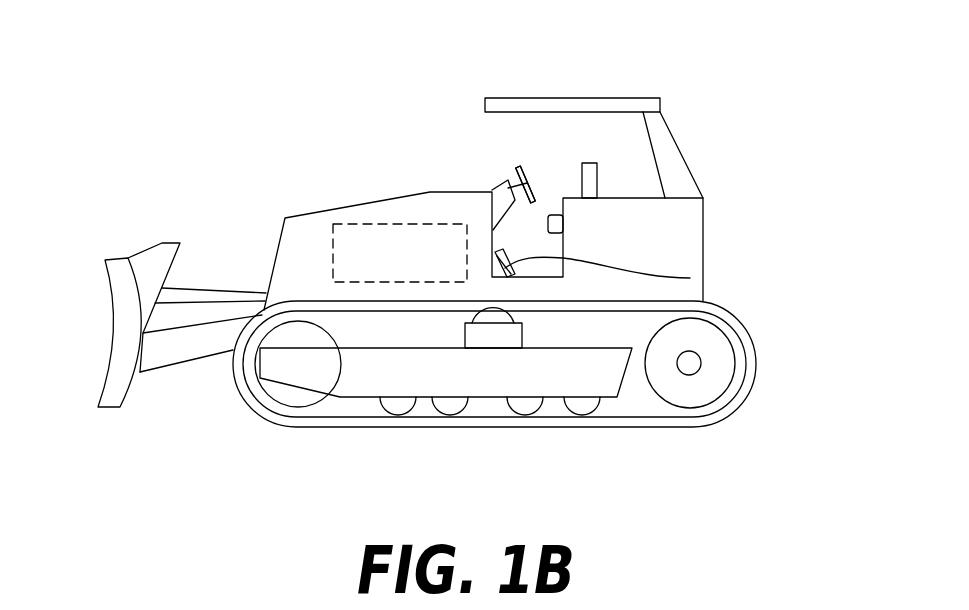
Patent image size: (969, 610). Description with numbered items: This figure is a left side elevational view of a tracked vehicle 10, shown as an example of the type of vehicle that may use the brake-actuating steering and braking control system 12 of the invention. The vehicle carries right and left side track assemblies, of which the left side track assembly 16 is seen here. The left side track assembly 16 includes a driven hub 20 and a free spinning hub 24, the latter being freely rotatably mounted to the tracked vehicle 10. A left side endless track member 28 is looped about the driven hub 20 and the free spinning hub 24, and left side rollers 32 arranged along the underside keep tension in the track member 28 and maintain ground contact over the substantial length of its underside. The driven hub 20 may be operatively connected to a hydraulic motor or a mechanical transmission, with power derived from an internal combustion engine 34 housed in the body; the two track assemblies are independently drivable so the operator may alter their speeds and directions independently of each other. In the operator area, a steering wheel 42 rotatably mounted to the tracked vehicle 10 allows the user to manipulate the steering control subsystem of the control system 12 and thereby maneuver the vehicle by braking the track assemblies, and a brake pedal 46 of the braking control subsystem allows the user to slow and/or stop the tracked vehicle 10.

The tracked vehicle 10 is at (680, 84).
The brake-actuating steering and braking control system 12 is at (459, 175).
The left side track assembly 16 is at (748, 393).
The driven hub 20 is at (273, 388).
The free spinning hub 24 is at (717, 357).
The left side endless track member 28 is at (748, 375).
The left side rollers 32 is at (412, 413).
The internal combustion engine 34 is at (338, 224).
The steering wheel 42 is at (518, 167).
The brake pedal 46 is at (690, 278).